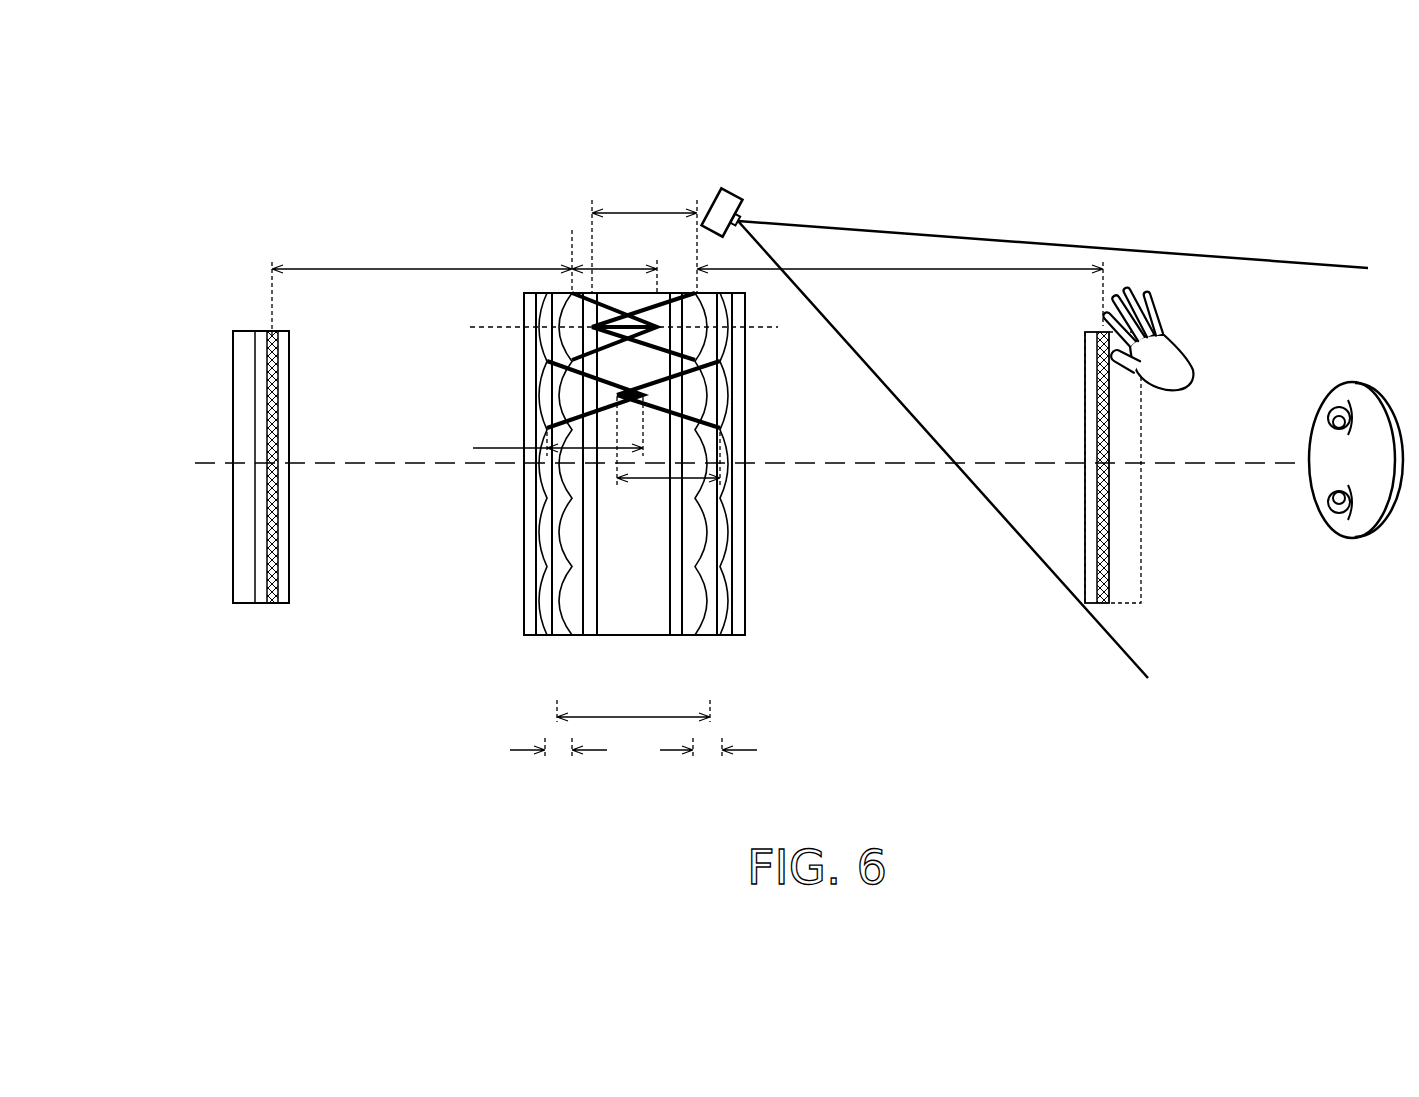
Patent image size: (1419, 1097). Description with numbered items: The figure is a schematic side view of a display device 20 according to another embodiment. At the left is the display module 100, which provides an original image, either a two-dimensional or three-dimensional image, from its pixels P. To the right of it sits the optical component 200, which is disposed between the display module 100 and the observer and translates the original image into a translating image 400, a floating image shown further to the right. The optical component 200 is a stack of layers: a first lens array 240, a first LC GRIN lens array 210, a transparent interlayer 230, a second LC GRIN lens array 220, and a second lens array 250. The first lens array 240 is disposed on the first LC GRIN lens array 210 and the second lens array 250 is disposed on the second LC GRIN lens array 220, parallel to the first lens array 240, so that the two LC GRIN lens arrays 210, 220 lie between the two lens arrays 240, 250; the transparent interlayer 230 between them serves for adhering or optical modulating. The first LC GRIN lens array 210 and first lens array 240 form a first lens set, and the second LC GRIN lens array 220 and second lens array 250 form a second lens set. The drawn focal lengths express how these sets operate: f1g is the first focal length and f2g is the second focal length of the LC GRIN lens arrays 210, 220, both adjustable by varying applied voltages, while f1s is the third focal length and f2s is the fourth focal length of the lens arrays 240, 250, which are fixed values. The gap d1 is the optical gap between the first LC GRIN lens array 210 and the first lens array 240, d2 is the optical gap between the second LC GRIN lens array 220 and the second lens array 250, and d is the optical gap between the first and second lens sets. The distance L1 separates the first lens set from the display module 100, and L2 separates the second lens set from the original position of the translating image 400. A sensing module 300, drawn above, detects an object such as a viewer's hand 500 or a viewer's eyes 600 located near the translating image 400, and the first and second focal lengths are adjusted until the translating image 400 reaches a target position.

The display device 20 is at (164, 150).
The display module 100 is at (224, 310).
The pixels P is at (272, 622).
The optical component 200 is at (551, 218).
The first LC GRIN lens array 210 is at (580, 637).
The second LC GRIN lens array 220 is at (698, 637).
The transparent interlayer 230 is at (627, 637).
The first lens array 240 is at (540, 637).
The second lens array 250 is at (728, 637).
The sensing module 300 is at (732, 198).
The translating image 400 is at (1141, 502).
The viewer's hand 500 is at (1178, 357).
The viewer's eyes 600 is at (1358, 382).
The distance between first lens set and display module L1 is at (422, 288).
The distance between second lens set and original position of translating image L2 is at (900, 283).
The first focal length f1g is at (614, 261).
The second focal length f2g is at (644, 238).
The third focal length f1s is at (558, 426).
The fourth focal length f2s is at (668, 452).
The optical gap between first lens set and second lens set d is at (633, 722).
The optical gap between first LC GRIN lens array and first lens array d1 is at (558, 759).
The optical gap between second LC GRIN lens array and second lens array d2 is at (708, 759).